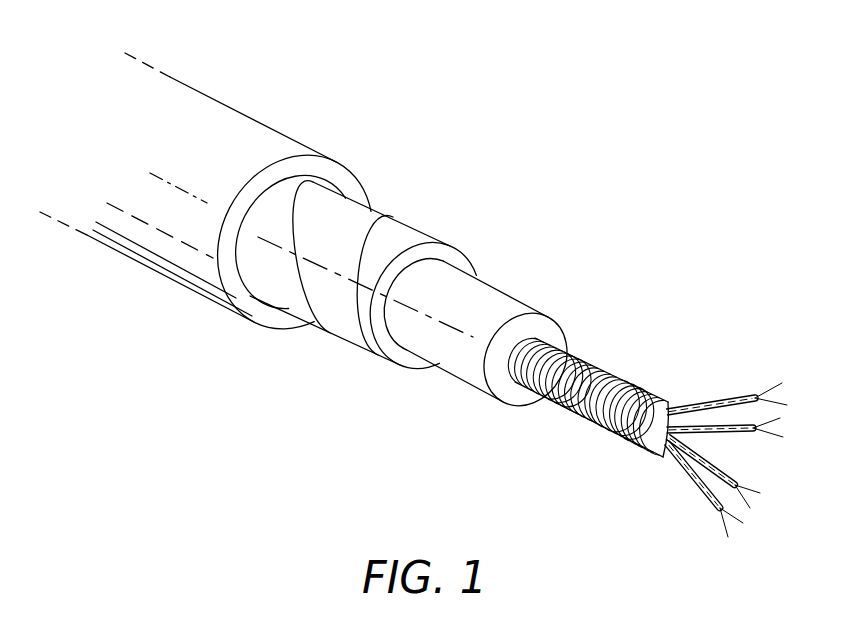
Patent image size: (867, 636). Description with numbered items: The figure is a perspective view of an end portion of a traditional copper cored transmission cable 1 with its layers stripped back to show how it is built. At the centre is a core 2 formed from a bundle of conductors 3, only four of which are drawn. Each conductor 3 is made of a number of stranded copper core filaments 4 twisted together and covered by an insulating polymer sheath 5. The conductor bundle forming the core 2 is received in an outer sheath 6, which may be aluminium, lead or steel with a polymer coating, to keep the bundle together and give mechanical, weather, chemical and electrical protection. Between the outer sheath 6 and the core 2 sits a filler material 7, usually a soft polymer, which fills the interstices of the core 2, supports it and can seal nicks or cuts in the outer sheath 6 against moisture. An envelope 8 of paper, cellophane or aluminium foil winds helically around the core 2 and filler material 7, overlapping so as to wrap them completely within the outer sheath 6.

The cable 1 is at (383, 72).
The core 2 is at (630, 358).
The conductor 3 is at (740, 398).
The stranded copper core filaments 4 is at (780, 394).
The insulating polymer sheath 5 is at (692, 404).
The outer sheath 6 is at (243, 116).
The filler material 7 is at (498, 293).
The envelope 8 is at (410, 229).